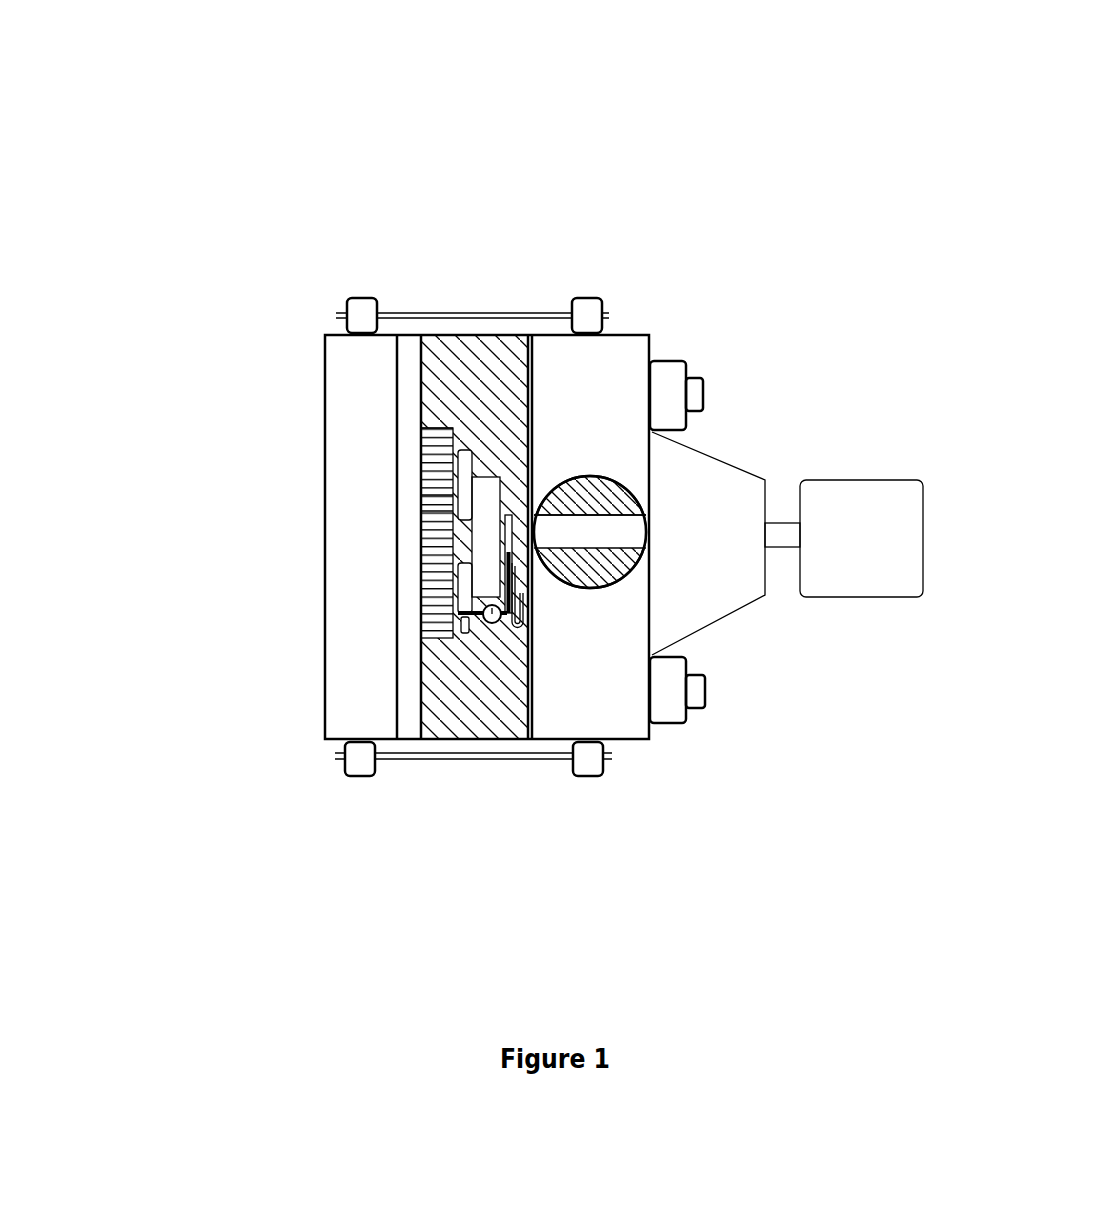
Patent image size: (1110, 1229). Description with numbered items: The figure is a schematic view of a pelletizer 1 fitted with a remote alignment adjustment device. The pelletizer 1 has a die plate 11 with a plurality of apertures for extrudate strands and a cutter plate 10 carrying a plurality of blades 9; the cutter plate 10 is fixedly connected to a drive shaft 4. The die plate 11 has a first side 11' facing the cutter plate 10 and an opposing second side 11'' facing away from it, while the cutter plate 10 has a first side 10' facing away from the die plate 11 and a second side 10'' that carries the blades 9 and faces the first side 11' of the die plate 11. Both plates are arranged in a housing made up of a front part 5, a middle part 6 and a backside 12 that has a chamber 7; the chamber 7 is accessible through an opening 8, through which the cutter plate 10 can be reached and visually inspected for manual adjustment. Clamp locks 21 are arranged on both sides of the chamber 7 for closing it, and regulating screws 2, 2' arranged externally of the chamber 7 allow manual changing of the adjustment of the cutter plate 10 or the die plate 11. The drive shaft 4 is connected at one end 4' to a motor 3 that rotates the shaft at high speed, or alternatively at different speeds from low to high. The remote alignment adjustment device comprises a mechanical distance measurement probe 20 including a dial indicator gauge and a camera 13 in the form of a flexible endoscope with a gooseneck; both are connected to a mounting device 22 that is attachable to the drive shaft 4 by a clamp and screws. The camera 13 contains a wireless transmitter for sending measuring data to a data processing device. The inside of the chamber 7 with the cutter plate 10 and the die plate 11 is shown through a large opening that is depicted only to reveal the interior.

The pelletizer 1 is at (194, 371).
The regulating screw 2 is at (700, 716).
The regulating screw 2' is at (714, 368).
The motor 3 is at (882, 533).
The drive shaft 4 is at (590, 338).
The end of drive shaft 4' is at (786, 609).
The front part 5 is at (362, 537).
The middle part 6 is at (583, 703).
The chamber 7 is at (475, 383).
The opening 8 is at (622, 502).
The blades 9 is at (467, 630).
The cutter plate 10 is at (511, 372).
The first side of cutter plate 10' is at (301, 604).
The second side of cutter plate 10'' is at (327, 613).
The die plate 11 is at (389, 702).
The first side of die plate 11' is at (464, 241).
The second side of die plate 11'' is at (306, 481).
The backside 12 is at (705, 588).
The camera 13 is at (508, 618).
The mechanical distance measurement probe 20 is at (492, 623).
The clamp locks 21 is at (358, 310).
The mounting device 22 is at (507, 533).